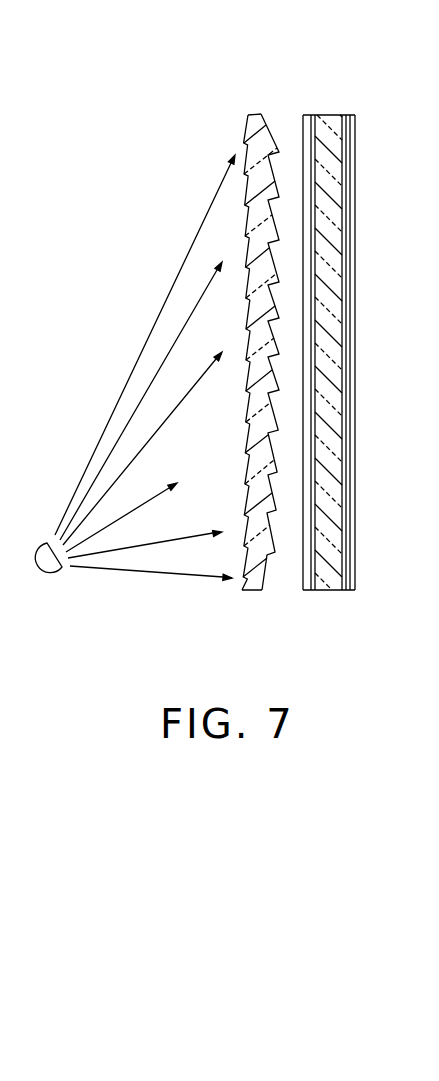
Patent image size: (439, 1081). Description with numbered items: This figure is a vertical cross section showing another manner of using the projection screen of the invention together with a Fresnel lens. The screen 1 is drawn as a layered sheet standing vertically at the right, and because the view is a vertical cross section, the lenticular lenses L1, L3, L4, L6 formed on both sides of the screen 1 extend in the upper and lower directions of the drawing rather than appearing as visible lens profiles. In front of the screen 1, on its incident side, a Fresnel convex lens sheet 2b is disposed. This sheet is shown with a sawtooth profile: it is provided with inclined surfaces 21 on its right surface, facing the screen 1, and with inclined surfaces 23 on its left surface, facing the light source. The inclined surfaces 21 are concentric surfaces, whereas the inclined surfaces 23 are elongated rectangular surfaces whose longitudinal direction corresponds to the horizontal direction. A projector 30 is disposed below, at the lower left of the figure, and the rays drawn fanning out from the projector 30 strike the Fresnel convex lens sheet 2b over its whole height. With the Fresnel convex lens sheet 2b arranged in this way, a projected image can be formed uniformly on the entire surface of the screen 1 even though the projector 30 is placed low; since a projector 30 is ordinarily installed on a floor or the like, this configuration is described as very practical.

The screen 1 is at (329, 101).
The lenticular lens L1 is at (303, 114).
The lenticular lens L3 is at (312, 113).
The lenticular lens L6 is at (345, 113).
The lenticular lens L4 is at (355, 114).
The Fresnel convex lens sheet 2b is at (248, 120).
The inclined surfaces 21 is at (268, 325).
The inclined surfaces 23 is at (241, 480).
The projector 30 is at (43, 577).